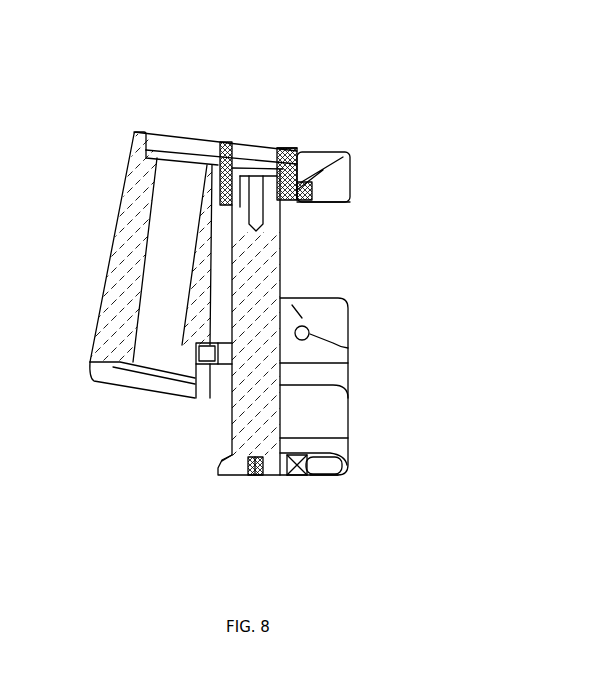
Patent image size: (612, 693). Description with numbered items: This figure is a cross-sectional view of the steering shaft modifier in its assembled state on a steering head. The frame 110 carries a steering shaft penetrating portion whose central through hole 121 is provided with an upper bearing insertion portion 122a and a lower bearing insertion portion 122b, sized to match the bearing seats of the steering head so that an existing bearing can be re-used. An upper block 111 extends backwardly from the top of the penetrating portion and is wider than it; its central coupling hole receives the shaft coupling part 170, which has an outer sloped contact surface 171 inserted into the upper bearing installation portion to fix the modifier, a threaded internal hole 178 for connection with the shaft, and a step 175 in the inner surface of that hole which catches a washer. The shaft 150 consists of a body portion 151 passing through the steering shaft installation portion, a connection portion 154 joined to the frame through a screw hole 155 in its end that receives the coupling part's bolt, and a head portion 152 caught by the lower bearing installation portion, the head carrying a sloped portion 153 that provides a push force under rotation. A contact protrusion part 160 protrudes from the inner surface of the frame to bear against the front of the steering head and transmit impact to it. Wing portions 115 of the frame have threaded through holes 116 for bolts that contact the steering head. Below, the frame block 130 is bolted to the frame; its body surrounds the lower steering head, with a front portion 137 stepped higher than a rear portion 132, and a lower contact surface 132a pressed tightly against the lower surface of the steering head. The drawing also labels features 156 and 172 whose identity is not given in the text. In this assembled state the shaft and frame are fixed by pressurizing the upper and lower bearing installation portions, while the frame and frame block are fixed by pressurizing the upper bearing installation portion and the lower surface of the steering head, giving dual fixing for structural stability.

The frame 110 is at (122, 118).
The upper block 111 is at (350, 170).
The wing portions 115 is at (350, 318).
The through holes 116 is at (348, 348).
The through hole 121 is at (118, 250).
The upper bearing insertion portion 122a is at (127, 150).
The lower bearing insertion portion 122b is at (92, 358).
The frame block 130 is at (361, 389).
The rear portion 132 is at (348, 470).
The lower contact surface 132a is at (352, 448).
The front portion 137 is at (195, 397).
The shaft 150 is at (288, 271).
The body portion 151 is at (283, 240).
The head portion 152 is at (223, 459).
The sloped portion 153 is at (214, 468).
The connection portion 154 is at (293, 150).
The screw hole 155 is at (280, 148).
The fixing protrusion 156 is at (256, 476).
The contact protrusion part 160 is at (283, 299).
The shaft coupling part 170 is at (222, 143).
The sloped contact surface 171 is at (308, 206).
The slot 172 is at (317, 173).
The step 175 is at (249, 168).
The internal hole 178 is at (350, 200).